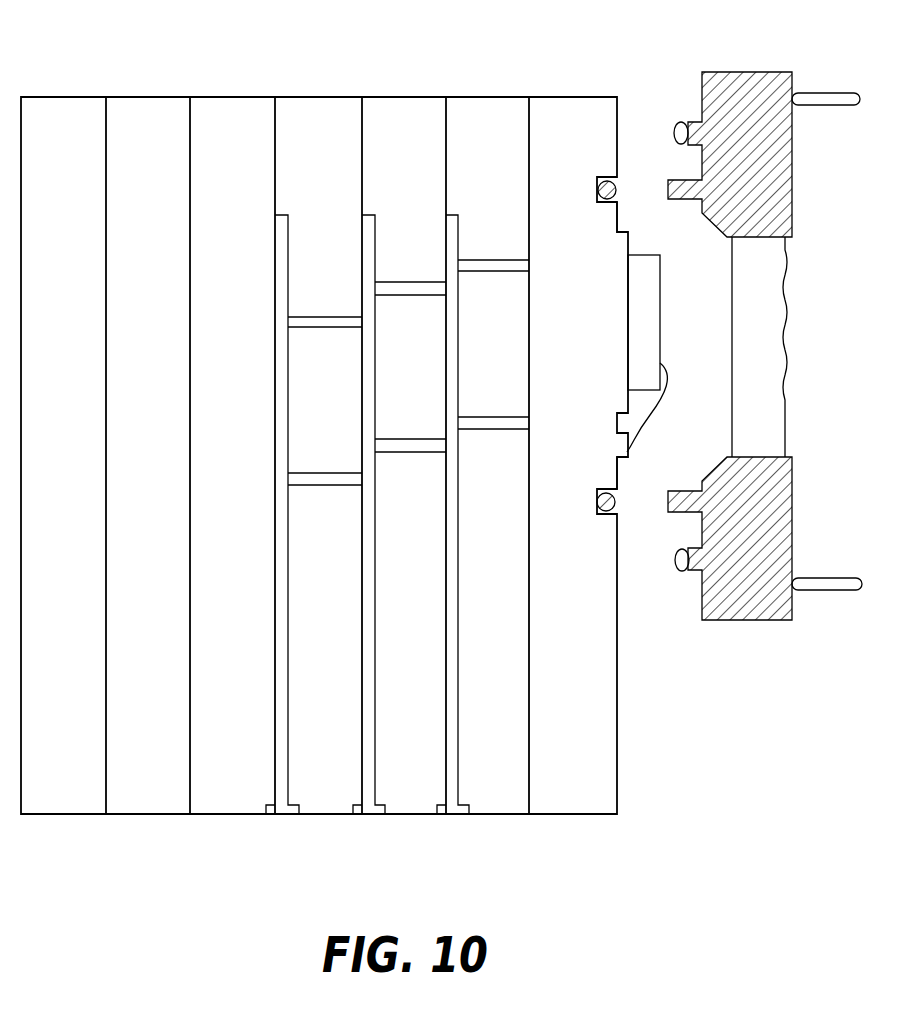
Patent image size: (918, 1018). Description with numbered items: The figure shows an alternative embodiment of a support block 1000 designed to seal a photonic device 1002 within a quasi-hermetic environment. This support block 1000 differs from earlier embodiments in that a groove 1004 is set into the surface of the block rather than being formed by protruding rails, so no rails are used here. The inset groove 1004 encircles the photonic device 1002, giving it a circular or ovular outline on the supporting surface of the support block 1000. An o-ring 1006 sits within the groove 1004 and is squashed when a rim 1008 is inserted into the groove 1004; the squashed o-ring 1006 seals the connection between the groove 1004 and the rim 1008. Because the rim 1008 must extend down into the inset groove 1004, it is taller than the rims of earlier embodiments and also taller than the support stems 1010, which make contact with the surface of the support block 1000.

The support block 1000 is at (160, 96).
The photonic device 1002 is at (658, 305).
The groove 1004 is at (598, 190).
The o-ring 1006 is at (612, 192).
The rim 1008 is at (683, 180).
The support stems 1010 is at (690, 122).